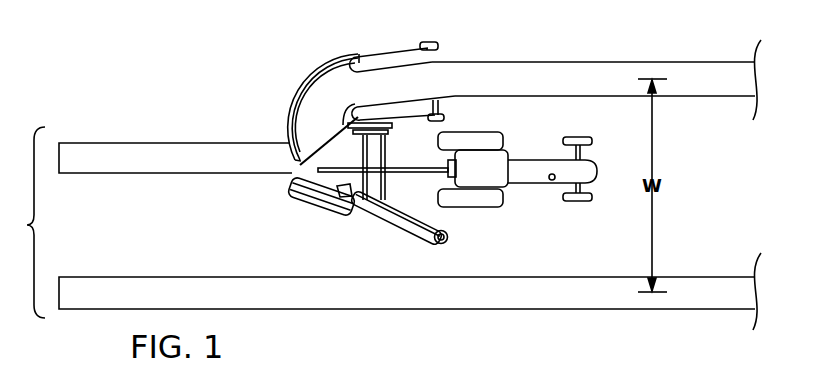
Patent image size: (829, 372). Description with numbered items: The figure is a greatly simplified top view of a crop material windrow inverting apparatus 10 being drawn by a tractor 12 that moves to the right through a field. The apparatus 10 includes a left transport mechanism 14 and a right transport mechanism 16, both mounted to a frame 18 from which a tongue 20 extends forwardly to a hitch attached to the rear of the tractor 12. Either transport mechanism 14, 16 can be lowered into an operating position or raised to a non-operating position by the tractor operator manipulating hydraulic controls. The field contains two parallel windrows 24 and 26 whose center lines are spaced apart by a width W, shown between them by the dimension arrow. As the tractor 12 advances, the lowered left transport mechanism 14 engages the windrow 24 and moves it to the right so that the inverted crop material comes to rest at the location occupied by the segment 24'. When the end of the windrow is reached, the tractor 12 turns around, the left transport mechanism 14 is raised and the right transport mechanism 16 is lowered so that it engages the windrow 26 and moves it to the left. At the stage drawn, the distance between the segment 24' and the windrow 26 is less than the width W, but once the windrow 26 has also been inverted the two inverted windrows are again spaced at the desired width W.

The crop material windrow inverting apparatus 10 is at (289, 46).
The tractor 12 is at (530, 183).
The left transport mechanism 14 is at (290, 92).
The right transport mechanism 16 is at (305, 216).
The frame 18 is at (387, 151).
The tongue 20 is at (414, 173).
The windrow 24 is at (528, 96).
The segment 24' is at (175, 134).
The windrow 26 is at (710, 292).